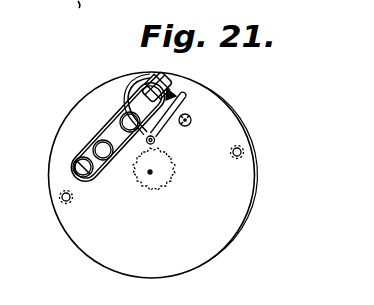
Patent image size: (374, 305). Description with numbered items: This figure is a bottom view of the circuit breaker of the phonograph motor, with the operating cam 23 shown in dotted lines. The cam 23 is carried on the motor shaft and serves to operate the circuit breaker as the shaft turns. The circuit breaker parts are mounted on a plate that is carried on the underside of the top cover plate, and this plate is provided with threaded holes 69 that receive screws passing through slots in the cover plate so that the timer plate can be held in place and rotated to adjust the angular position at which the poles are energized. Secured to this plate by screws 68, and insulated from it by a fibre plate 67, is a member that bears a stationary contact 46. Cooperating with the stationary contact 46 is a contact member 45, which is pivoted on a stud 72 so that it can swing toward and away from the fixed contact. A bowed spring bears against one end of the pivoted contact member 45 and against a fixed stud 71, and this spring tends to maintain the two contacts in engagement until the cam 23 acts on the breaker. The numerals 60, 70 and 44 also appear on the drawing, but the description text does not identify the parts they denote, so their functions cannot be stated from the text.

The disc 60 is at (230, 132).
The threaded holes 69 is at (243, 152).
The stud 72 is at (158, 143).
The cam 23 is at (150, 195).
The fibre plate 67 is at (80, 145).
The screw 70 is at (68, 165).
The screws 68 is at (128, 121).
The stationary contact 46 is at (156, 80).
The contact member 45 is at (173, 95).
The rod 44 is at (184, 97).
The fixed stud 71 is at (185, 126).